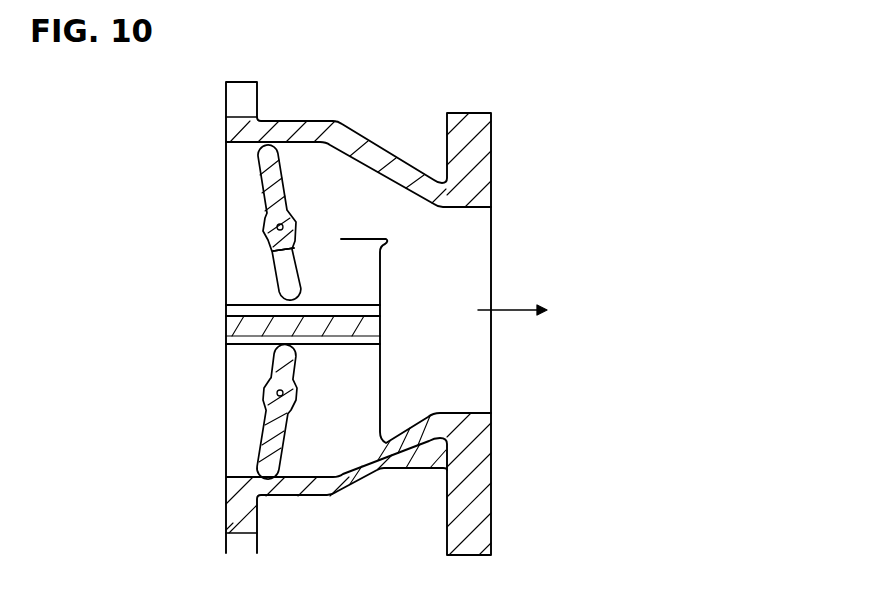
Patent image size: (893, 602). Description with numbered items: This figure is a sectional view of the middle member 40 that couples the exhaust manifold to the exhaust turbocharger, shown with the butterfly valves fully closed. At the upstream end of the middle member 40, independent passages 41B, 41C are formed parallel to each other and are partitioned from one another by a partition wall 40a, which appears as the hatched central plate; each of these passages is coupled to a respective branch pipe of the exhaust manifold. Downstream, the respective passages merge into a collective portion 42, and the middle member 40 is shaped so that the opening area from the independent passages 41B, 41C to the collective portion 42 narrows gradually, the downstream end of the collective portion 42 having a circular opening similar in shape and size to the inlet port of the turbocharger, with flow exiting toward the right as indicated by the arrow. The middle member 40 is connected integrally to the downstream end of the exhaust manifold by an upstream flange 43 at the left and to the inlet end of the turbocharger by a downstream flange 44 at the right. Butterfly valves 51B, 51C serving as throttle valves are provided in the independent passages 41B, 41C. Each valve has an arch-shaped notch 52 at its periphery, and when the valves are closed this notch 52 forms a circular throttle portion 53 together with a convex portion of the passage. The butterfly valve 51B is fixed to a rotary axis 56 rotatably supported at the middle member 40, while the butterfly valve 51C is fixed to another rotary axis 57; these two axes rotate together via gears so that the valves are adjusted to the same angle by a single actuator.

The middle member 40 is at (493, 72).
The partition wall 40a is at (228, 330).
The independent passage 41B is at (308, 170).
The independent passage 41C is at (319, 447).
The collective portion 42 is at (467, 257).
The upstream flange 43 is at (237, 518).
The downstream flange 44 is at (485, 530).
The butterfly valve 51B is at (265, 183).
The butterfly valve 51C is at (262, 437).
The notch 52 is at (282, 271).
The throttle portion 53 is at (282, 271).
The rotary axis 56 is at (264, 236).
The rotary axis 57 is at (263, 390).